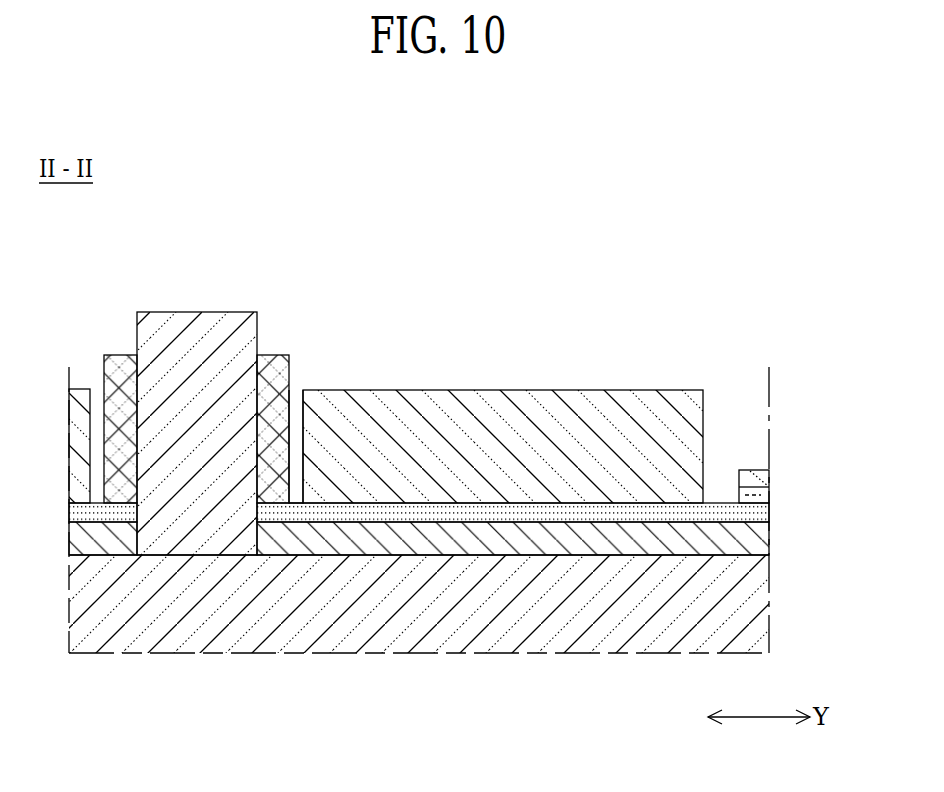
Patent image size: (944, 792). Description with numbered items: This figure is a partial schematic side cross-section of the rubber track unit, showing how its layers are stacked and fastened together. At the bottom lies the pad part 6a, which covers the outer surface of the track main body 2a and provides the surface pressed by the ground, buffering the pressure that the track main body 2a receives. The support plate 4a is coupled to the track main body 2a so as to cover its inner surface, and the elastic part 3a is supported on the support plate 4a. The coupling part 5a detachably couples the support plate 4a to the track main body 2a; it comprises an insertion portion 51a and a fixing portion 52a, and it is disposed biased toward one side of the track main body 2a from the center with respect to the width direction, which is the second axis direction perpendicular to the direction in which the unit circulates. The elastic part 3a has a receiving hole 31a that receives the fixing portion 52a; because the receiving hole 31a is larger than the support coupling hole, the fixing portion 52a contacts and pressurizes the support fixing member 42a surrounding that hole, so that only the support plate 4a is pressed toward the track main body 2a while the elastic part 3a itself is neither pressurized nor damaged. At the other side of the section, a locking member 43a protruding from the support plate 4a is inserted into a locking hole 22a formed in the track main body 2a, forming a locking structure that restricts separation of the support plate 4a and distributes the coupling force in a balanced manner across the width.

The track main body 2a is at (457, 625).
The elastic part 3a is at (395, 455).
The support plate 4a is at (463, 420).
The coupling part 5a is at (211, 376).
The pad part 6a is at (700, 598).
The locking hole 22a is at (757, 489).
The receiving hole 31a is at (297, 431).
The support fixing member 42a is at (273, 557).
The locking member 43a is at (757, 514).
The insertion portion 51a is at (197, 396).
The fixing portion 52a is at (273, 383).